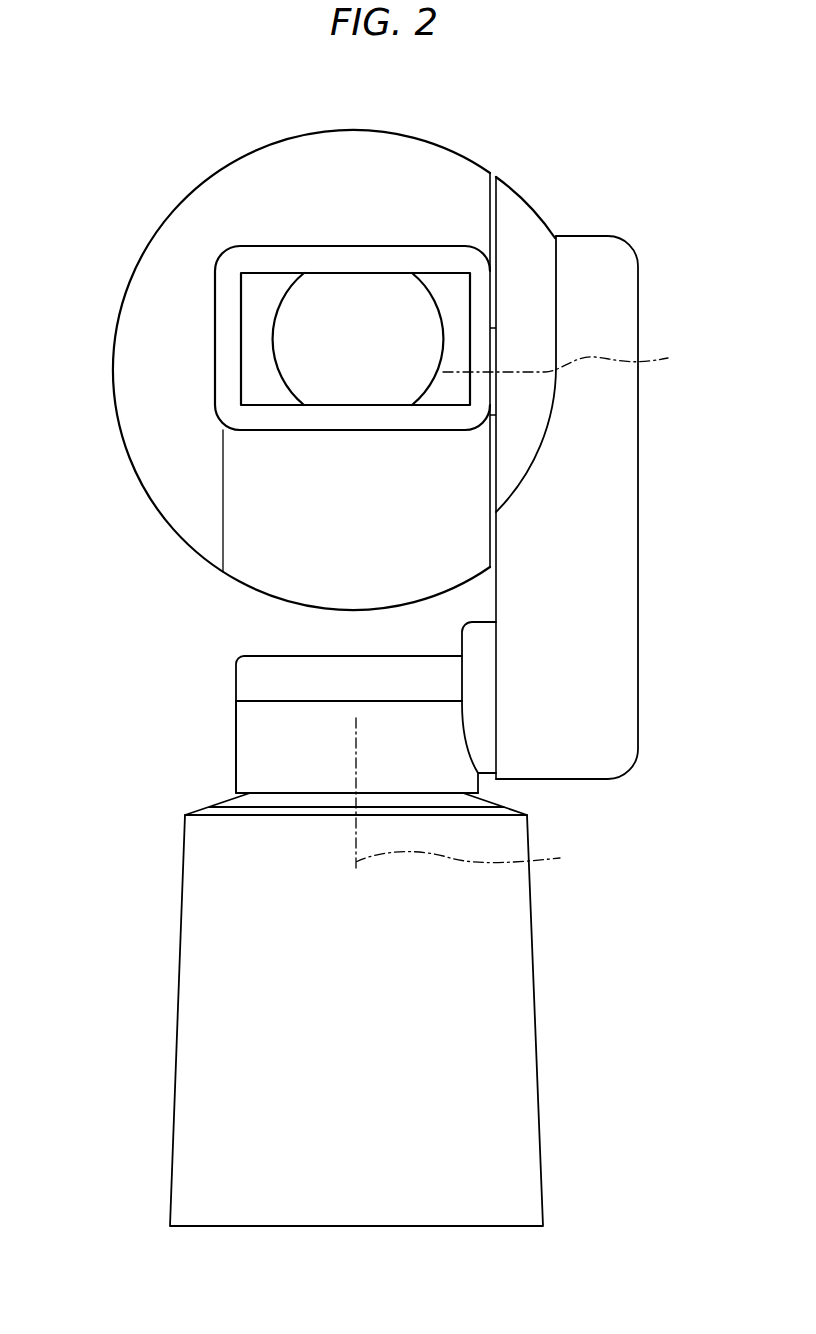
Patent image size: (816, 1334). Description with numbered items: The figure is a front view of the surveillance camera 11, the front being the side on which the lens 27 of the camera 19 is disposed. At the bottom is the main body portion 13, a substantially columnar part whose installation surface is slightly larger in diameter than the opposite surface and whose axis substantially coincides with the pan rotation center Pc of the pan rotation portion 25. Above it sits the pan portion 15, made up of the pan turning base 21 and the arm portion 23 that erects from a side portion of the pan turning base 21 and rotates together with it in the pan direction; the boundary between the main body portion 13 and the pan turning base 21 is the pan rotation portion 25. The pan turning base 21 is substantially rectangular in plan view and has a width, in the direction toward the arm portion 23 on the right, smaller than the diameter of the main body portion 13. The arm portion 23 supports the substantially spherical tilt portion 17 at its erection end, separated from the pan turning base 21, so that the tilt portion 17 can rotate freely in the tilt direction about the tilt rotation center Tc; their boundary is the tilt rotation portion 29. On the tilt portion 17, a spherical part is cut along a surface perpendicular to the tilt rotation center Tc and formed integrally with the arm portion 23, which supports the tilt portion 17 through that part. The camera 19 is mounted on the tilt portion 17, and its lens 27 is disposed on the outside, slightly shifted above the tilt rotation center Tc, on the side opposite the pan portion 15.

The surveillance camera 11 is at (161, 121).
The main body portion 13 is at (172, 1152).
The pan portion 15 is at (226, 670).
The tilt portion 17 is at (365, 129).
The camera 19 is at (215, 303).
The pan turning base 21 is at (236, 727).
The arm portion 23 is at (640, 485).
The pan rotation portion 25 is at (224, 797).
The lens 27 is at (300, 360).
The tilt rotation portion 29 is at (500, 164).
The tilt rotation center Tc is at (569, 356).
The pan rotation center Pc is at (473, 796).